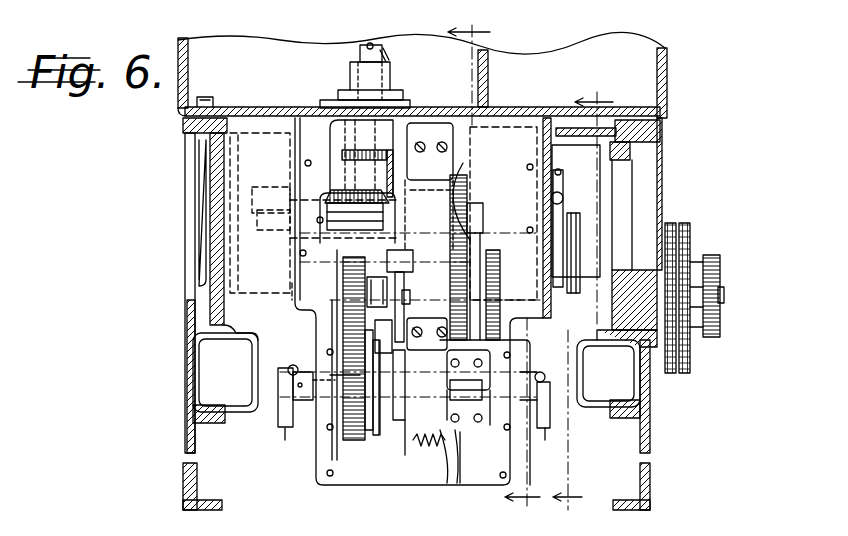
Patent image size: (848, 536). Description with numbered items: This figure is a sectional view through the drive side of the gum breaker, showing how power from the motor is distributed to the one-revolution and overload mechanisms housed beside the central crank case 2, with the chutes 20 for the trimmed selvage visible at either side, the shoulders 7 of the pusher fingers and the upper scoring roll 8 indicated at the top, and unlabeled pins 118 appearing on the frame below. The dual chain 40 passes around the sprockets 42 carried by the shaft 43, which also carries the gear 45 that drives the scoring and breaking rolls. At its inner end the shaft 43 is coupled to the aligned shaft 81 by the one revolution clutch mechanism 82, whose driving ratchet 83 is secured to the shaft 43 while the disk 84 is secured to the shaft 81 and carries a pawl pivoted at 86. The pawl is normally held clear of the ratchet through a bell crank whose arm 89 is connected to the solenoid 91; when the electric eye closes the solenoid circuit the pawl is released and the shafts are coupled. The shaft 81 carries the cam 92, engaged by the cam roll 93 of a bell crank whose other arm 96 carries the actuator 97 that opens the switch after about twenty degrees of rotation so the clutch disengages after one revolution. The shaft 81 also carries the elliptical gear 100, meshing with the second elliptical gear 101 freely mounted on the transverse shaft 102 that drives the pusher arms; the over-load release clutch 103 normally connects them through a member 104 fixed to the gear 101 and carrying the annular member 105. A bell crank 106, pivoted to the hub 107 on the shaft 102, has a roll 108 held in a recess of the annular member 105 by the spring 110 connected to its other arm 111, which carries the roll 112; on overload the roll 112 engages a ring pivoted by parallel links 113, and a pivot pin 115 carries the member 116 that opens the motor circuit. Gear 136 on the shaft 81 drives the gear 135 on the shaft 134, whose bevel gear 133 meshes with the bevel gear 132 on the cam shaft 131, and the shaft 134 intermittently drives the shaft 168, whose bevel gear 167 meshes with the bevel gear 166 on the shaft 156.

The central crank case 2 is at (316, 494).
The shoulders 7 is at (583, 303).
The upper scoring roll 8 is at (494, 278).
The chutes 20 is at (425, 376).
The dual chain 40 is at (670, 374).
The sprockets 42 is at (701, 363).
The shaft 43 is at (724, 298).
The gear 45 is at (717, 265).
The aligned shaft 81 is at (292, 292).
The one revolution clutch mechanism 82 is at (503, 213).
The driving ratchet 83 is at (493, 258).
The disk 84 is at (484, 248).
The pawl pivot 86 is at (458, 355).
The bell crank arm 89 is at (575, 268).
The solenoid 91 is at (560, 170).
The cam 92 is at (405, 278).
The cam roll 93 is at (413, 262).
The bell crank arm 96 is at (562, 173).
The actuator 97 is at (563, 198).
The elliptical gear 100 is at (352, 265).
The second elliptical gear 101 is at (318, 423).
The transverse shaft 102 is at (290, 397).
The over-load release clutch 103 is at (380, 420).
The clutch member 104 is at (363, 423).
The annular member 105 is at (358, 458).
The bell crank 106 is at (427, 327).
The hub 107 is at (398, 417).
The roll 108 is at (380, 308).
The spring 110 is at (440, 388).
The bell crank arm 111 is at (410, 455).
The roll 112 is at (437, 488).
The parallel links 113 is at (470, 426).
The pivot pin 115 is at (502, 372).
The switch actuating member 116 is at (462, 484).
The pin 118 is at (545, 432).
The cam shaft 131 is at (356, 78).
The bevel gear 132 is at (338, 195).
The bevel gear 133 is at (357, 220).
The shaft 134 is at (489, 205).
The gear 135 is at (458, 175).
The gear 136 is at (448, 292).
The shaft 156 is at (383, 55).
The bevel gear 166 is at (384, 190).
The bevel gear 167 is at (400, 157).
The shaft 168 is at (241, 188).